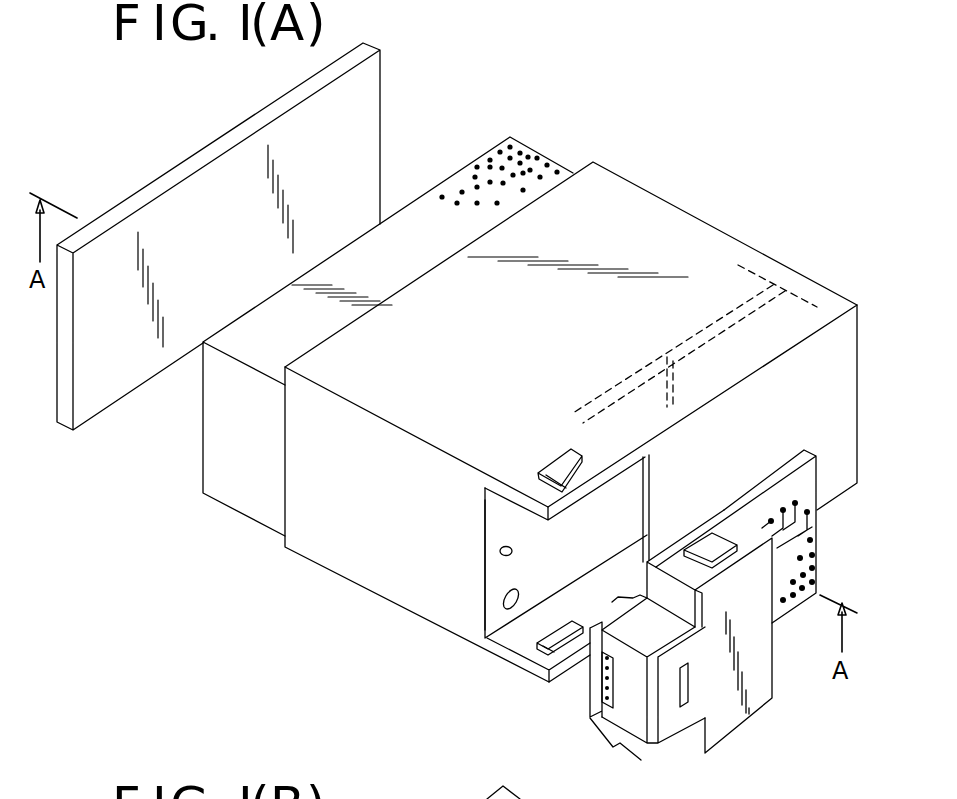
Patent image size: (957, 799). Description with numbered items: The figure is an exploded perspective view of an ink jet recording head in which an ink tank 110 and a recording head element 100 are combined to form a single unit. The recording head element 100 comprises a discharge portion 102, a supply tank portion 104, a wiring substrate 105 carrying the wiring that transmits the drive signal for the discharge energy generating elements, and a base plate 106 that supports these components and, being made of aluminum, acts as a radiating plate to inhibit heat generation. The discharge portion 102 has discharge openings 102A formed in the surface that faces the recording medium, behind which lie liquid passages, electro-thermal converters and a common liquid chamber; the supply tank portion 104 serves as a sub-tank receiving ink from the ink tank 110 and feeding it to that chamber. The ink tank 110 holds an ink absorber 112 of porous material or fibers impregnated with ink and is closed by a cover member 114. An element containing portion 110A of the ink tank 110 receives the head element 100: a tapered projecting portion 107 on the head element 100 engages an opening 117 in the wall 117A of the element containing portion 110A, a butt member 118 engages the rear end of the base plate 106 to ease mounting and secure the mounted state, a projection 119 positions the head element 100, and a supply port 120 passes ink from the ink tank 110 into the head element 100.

The recording head element 100 is at (656, 590).
The discharge portion 102 is at (661, 740).
The discharge openings 102A is at (603, 677).
The supply tank portion 104 is at (766, 697).
The wiring substrate 105 is at (803, 477).
The base plate 106 is at (590, 707).
The projecting portion 107 is at (719, 535).
The ink tank 110 is at (384, 588).
The element containing portion 110A is at (488, 568).
The ink absorber 112 is at (542, 157).
The cover member 114 is at (370, 147).
The opening 117 is at (560, 465).
The wall 117A is at (530, 485).
The butt member 118 is at (637, 381).
The projection 119 is at (500, 545).
The supply port 120 is at (502, 597).